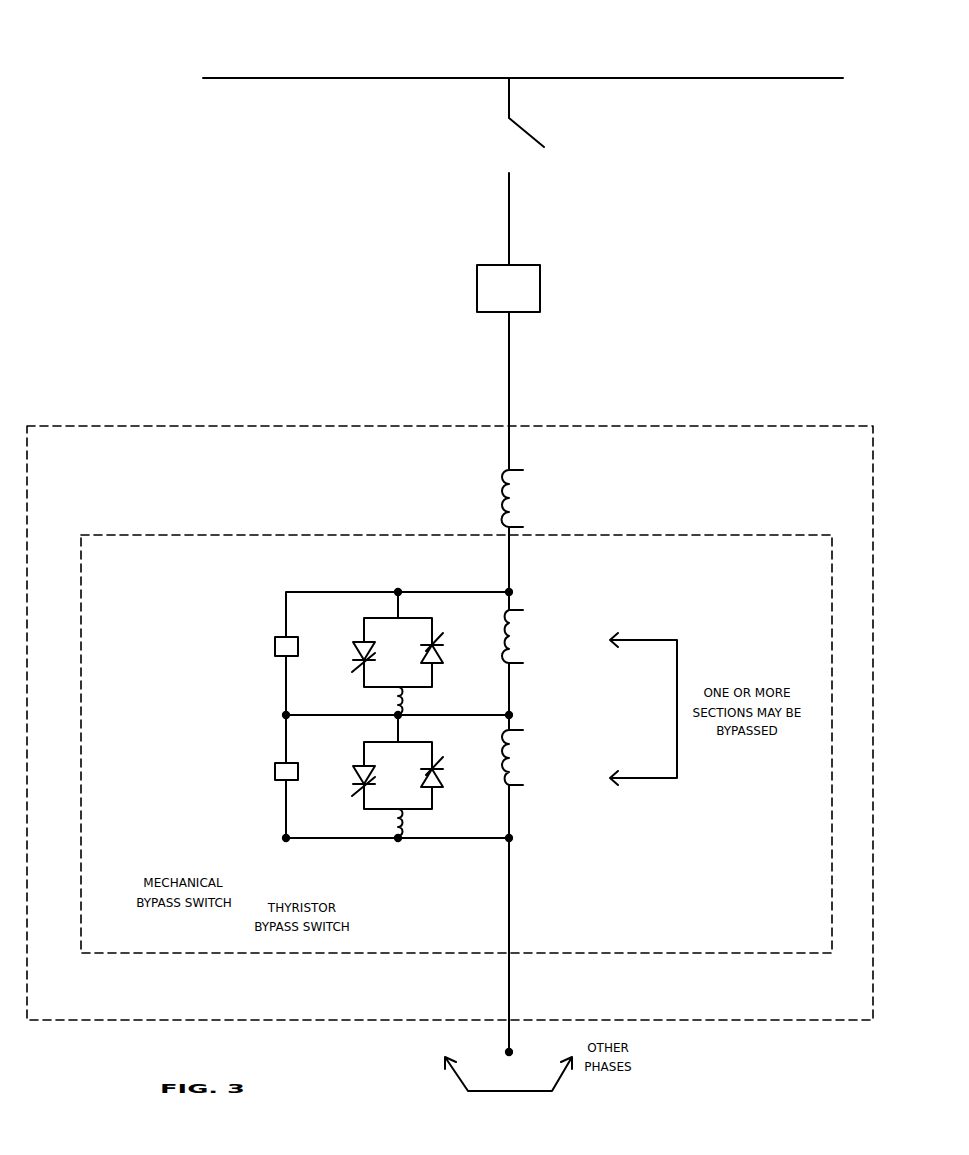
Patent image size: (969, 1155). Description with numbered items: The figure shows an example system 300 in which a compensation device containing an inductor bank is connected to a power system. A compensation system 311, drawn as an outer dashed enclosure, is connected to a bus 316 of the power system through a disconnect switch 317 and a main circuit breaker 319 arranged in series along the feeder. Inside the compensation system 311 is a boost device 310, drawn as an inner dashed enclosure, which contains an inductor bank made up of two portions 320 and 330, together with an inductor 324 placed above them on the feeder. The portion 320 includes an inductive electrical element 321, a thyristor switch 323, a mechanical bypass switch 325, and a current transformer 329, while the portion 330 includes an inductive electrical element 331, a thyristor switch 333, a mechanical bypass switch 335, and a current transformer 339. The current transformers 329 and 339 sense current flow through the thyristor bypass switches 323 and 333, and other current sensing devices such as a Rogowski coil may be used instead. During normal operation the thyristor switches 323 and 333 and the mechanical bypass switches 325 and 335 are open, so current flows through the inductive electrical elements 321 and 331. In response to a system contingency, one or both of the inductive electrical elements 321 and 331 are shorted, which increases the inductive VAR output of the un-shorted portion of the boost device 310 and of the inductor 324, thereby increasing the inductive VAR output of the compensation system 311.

The system 300 is at (356, 532).
The bus 316 is at (523, 62).
The disconnect switch 317 is at (593, 112).
The main circuit breaker 319 is at (585, 288).
The compensation system 311 is at (200, 426).
The boost device 310 is at (273, 535).
The inductor 324 is at (534, 498).
The inductive electrical element 321 is at (533, 636).
The inductive electrical element 331 is at (528, 757).
The portion 320 is at (643, 666).
The portion 330 is at (643, 747).
The mechanical bypass switch 325 is at (237, 888).
The mechanical bypass switch 335 is at (258, 800).
The thyristor switch 323 is at (312, 897).
The thyristor switch 333 is at (335, 803).
The current transformer 329 is at (413, 701).
The current transformer 339 is at (411, 823).